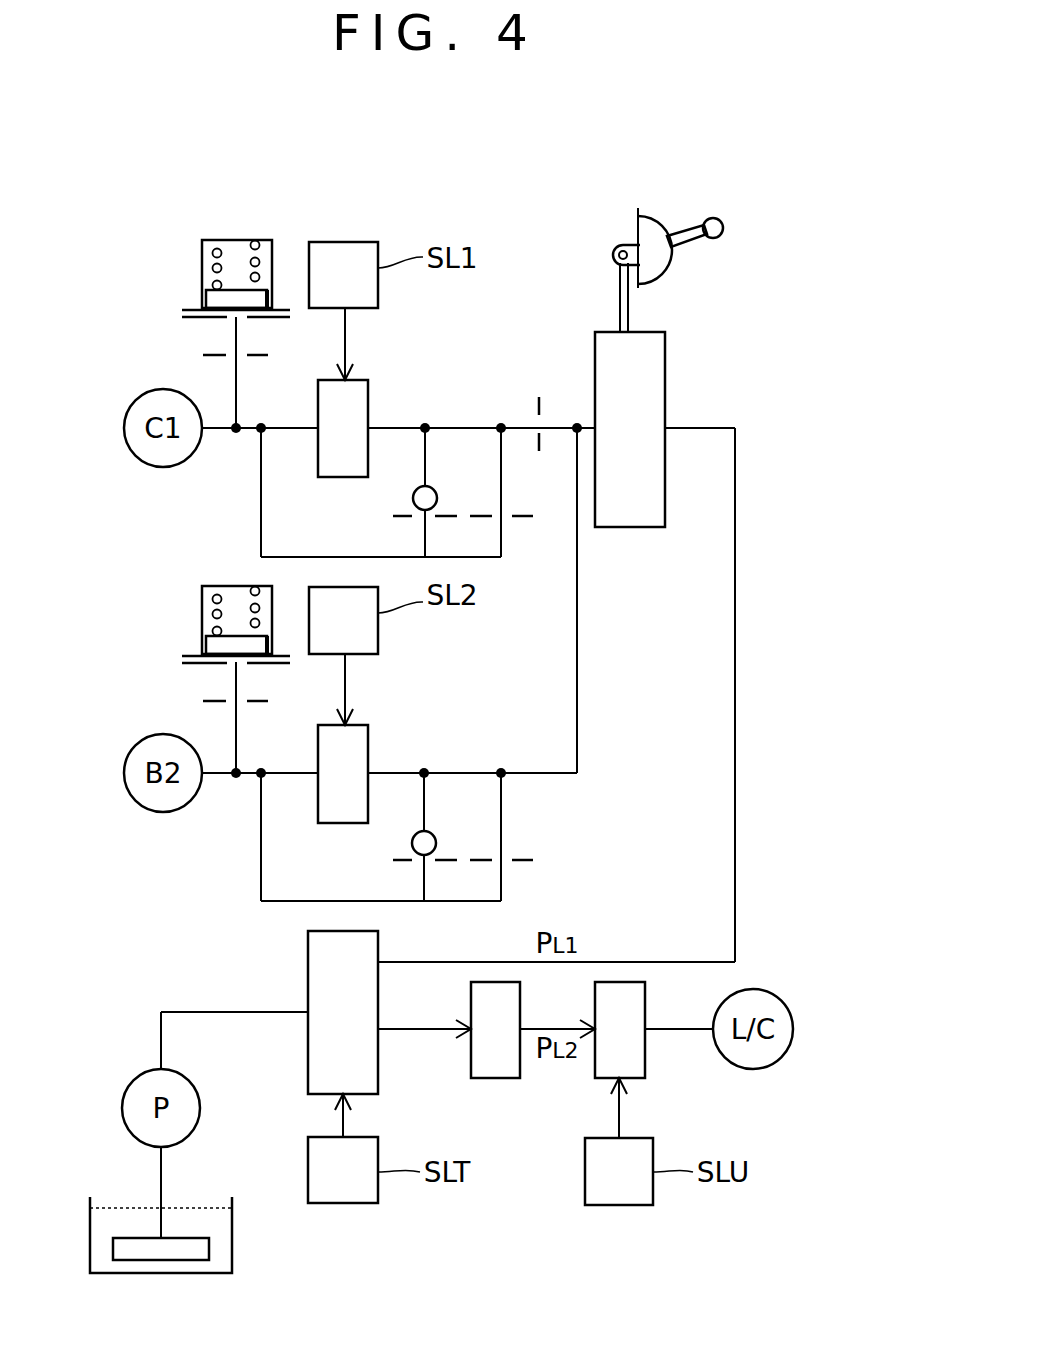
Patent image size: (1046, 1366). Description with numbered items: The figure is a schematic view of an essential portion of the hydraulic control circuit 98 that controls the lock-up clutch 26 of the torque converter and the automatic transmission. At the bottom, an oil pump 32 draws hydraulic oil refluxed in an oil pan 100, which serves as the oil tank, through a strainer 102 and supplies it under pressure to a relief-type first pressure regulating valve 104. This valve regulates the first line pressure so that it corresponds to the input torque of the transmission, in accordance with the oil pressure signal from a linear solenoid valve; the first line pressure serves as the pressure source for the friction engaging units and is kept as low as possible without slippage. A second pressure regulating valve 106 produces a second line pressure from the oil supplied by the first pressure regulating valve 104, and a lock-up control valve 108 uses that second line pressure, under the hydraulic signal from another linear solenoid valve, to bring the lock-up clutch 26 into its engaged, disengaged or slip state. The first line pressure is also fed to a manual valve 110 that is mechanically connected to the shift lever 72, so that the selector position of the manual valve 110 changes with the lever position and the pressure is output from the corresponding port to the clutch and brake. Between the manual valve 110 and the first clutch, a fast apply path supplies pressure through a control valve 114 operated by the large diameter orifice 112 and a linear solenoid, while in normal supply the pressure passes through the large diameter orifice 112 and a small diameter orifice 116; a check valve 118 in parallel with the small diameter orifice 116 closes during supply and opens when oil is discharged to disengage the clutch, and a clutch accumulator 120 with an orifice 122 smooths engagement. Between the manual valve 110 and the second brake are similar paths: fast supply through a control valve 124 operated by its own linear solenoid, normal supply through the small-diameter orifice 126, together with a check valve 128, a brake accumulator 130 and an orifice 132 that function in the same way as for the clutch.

The hydraulic control circuit 98 is at (232, 164).
The C1 accumulator 120 is at (202, 258).
The orifice 122 is at (208, 355).
The control valve 114 is at (368, 390).
The large diameter orifice 112 is at (539, 398).
The small diameter orifice 116 is at (522, 516).
The check valve 118 is at (445, 516).
The shift lever 72 is at (684, 226).
The manual valve 110 is at (665, 350).
The B2 accumulator 130 is at (202, 603).
The orifice 132 is at (208, 701).
The control valve 124 is at (368, 735).
The check valve 128 is at (445, 860).
The small-diameter orifice 126 is at (522, 860).
The first pressure regulating valve 104 is at (308, 990).
The second pressure regulating valve 106 is at (495, 1078).
The lock-up control valve 108 is at (645, 1058).
The lock-up clutch 26 is at (793, 1030).
The oil pump 32 is at (122, 1108).
The oil pan 100 is at (232, 1233).
The strainer 102 is at (175, 1260).